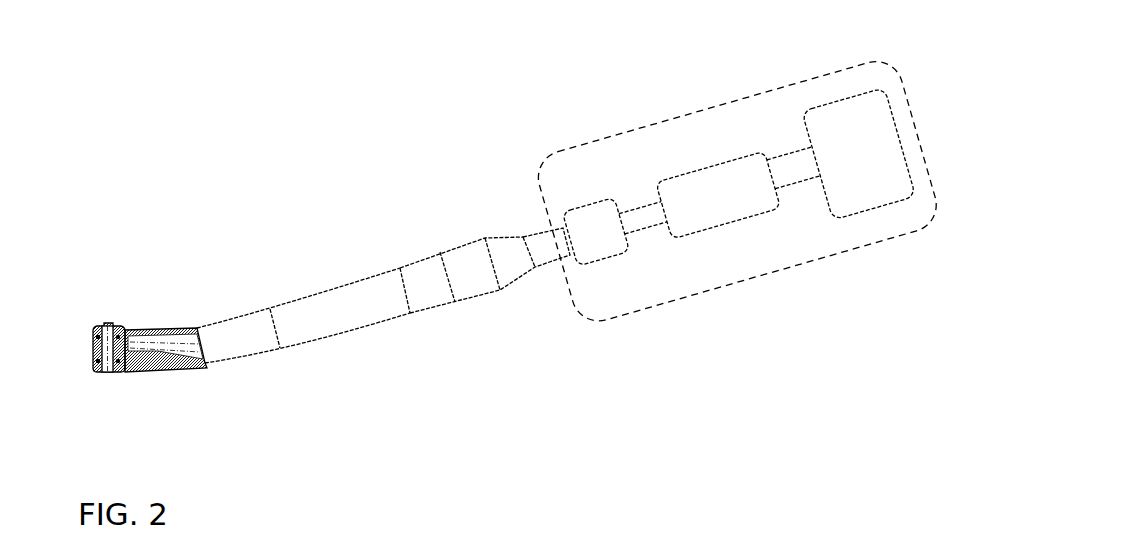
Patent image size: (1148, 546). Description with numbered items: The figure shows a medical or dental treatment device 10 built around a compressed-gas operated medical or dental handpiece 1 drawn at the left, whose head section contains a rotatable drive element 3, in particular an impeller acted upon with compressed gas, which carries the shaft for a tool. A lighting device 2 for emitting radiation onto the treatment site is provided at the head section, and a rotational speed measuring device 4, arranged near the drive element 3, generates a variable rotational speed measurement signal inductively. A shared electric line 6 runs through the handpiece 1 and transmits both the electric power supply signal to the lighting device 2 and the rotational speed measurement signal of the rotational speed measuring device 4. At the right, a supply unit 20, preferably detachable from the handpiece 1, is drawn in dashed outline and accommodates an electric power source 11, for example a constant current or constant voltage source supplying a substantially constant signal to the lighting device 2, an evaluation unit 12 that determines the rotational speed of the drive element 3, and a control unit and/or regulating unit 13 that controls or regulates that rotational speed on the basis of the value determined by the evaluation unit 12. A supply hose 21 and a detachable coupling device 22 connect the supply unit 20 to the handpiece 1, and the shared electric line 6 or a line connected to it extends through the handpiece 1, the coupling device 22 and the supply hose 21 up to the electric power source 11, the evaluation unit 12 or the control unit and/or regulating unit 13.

The medical or dental handpiece 1 is at (320, 272).
The lighting device 2 is at (119, 378).
The drive element 3 is at (87, 342).
The rotational speed measuring device 4 is at (128, 342).
The shared electric line 6 is at (160, 366).
The medical or dental treatment device 10 is at (499, 139).
The electric power source 11 is at (595, 231).
The evaluation unit 12 is at (718, 195).
The control unit and/or regulating unit 13 is at (859, 154).
The supply unit 20 is at (760, 95).
The supply hose 21 is at (551, 261).
The coupling device 22 is at (438, 241).